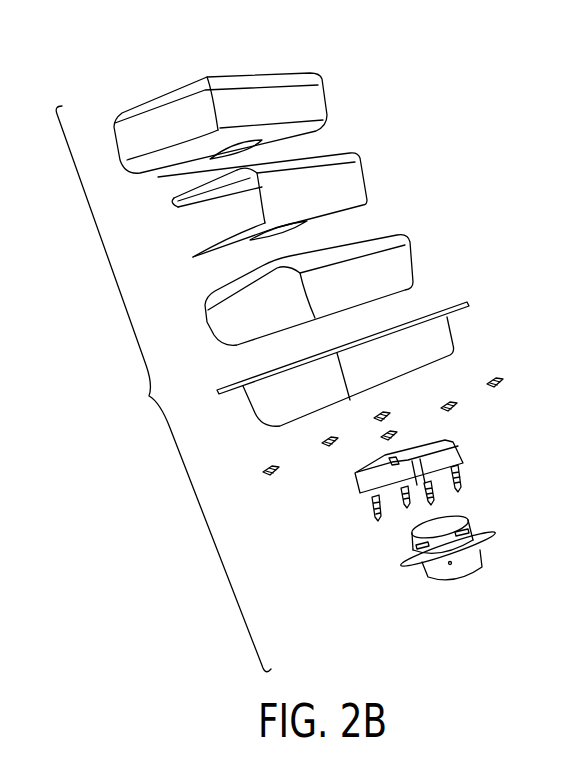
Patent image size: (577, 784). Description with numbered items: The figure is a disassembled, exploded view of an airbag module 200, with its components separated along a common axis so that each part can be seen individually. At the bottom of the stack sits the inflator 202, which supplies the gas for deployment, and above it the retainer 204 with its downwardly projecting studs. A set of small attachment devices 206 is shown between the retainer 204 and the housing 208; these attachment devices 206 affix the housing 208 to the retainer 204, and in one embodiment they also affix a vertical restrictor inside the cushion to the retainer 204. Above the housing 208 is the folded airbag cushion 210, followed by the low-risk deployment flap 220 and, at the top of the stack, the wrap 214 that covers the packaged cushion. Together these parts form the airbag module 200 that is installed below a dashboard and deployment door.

The airbag module 200 is at (149, 396).
The inflator 202 is at (406, 566).
The retainer 204 is at (362, 492).
The attachment devices 206 is at (493, 378).
The housing 208 is at (460, 302).
The airbag cushion 210 is at (408, 253).
The wrap 214 is at (326, 98).
The low-risk deployment (LRD) flap 220 is at (363, 171).